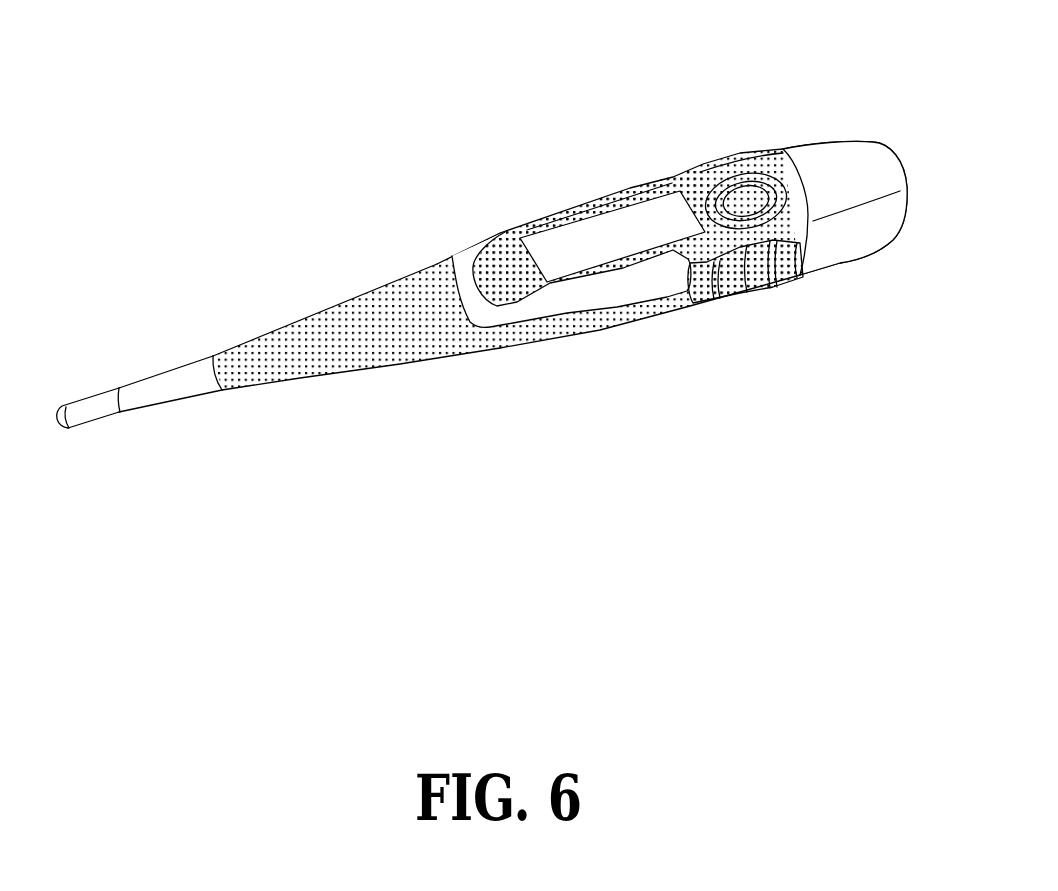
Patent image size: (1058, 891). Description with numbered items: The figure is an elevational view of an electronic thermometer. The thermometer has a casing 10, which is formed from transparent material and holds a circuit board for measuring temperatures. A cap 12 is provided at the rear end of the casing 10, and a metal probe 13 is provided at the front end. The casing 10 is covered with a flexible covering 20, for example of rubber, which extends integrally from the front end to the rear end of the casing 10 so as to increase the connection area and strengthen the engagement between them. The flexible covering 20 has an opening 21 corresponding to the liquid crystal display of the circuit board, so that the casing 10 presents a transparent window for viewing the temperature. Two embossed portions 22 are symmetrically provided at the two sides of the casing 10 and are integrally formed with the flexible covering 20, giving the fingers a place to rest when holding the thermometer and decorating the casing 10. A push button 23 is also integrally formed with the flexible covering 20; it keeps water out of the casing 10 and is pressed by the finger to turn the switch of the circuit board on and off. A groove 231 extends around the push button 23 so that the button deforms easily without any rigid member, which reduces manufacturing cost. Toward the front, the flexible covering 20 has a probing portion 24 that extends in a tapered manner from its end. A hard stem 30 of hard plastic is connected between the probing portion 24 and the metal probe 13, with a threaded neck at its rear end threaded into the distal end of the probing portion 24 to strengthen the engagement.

The casing 10 is at (503, 297).
The cap 12 is at (870, 166).
The metal probe 13 is at (92, 413).
The flexible covering 20 is at (537, 337).
The opening 21 is at (670, 183).
The embossed portion 22 is at (747, 293).
The push button 23 is at (745, 190).
The groove 231 is at (780, 152).
The probing portion 24 is at (347, 347).
The hard stem 30 is at (178, 390).